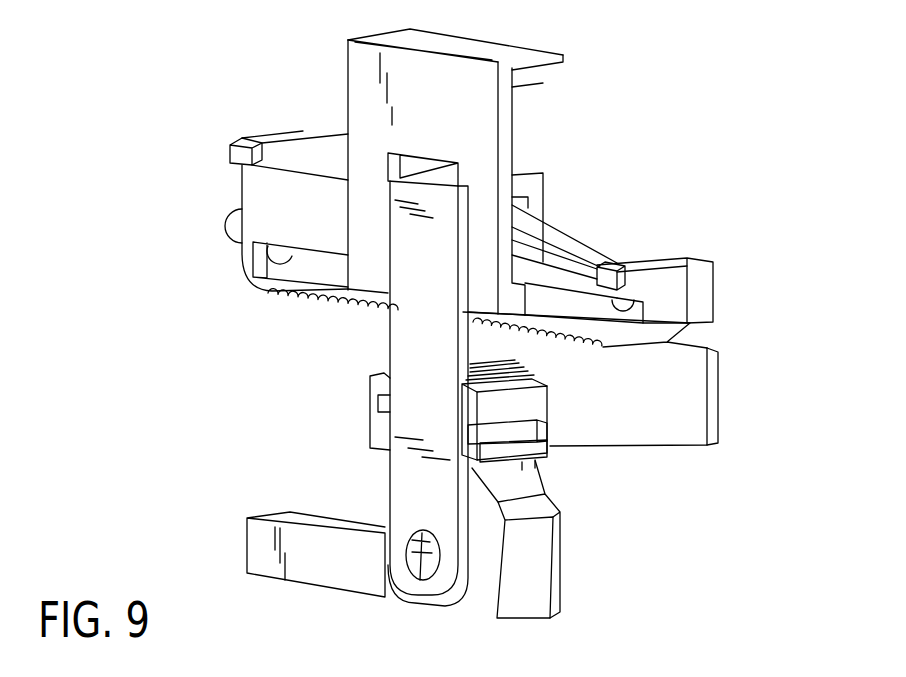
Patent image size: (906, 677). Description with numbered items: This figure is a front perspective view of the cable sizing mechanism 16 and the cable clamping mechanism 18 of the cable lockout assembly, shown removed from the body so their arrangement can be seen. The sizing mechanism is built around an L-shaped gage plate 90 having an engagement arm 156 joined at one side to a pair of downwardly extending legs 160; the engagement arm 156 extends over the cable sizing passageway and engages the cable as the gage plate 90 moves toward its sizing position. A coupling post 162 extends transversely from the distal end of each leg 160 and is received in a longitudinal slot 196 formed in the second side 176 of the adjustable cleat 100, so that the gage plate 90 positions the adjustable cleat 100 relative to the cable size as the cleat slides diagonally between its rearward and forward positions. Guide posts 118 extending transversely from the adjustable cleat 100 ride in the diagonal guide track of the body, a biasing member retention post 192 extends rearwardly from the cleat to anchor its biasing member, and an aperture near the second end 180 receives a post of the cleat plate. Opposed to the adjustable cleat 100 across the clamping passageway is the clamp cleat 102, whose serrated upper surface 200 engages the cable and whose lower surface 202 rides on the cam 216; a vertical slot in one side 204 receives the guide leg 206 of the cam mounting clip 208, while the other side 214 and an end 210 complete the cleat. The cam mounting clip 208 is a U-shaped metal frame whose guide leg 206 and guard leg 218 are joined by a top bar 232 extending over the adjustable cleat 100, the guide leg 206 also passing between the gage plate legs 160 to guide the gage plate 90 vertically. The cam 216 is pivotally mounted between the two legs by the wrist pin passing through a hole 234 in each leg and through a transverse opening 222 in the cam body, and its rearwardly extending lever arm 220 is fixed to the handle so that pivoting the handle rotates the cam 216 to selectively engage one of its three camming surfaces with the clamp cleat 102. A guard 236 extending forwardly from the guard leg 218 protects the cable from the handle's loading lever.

The cable sizing mechanism 16 is at (651, 55).
The cable clamping mechanism 18 is at (280, 348).
The gage plate 90 is at (347, 38).
The adjustable cleat 100 is at (245, 190).
The clamp cleat 102 is at (552, 448).
The guide posts 118 is at (232, 146).
The engagement arm 156 is at (545, 72).
The legs 160 is at (368, 234).
The coupling post 162 is at (528, 300).
The second side 176 is at (308, 205).
The second end 180 is at (668, 296).
The biasing member retention post 192 is at (232, 228).
The longitudinal slot 196 is at (280, 283).
The upper surface 200 is at (528, 377).
The lower surface 202 is at (374, 448).
The side 204 is at (376, 405).
The guide leg 206 is at (405, 348).
The cam mounting clip 208 is at (542, 182).
The end 210 is at (380, 376).
The side 214 is at (550, 400).
The cam 216 is at (562, 560).
The guard leg 218 is at (542, 470).
The lever arm 220 is at (532, 410).
The transverse opening 222 is at (418, 582).
The top bar 232 is at (445, 180).
The hole 234 is at (430, 562).
The guard 236 is at (713, 441).